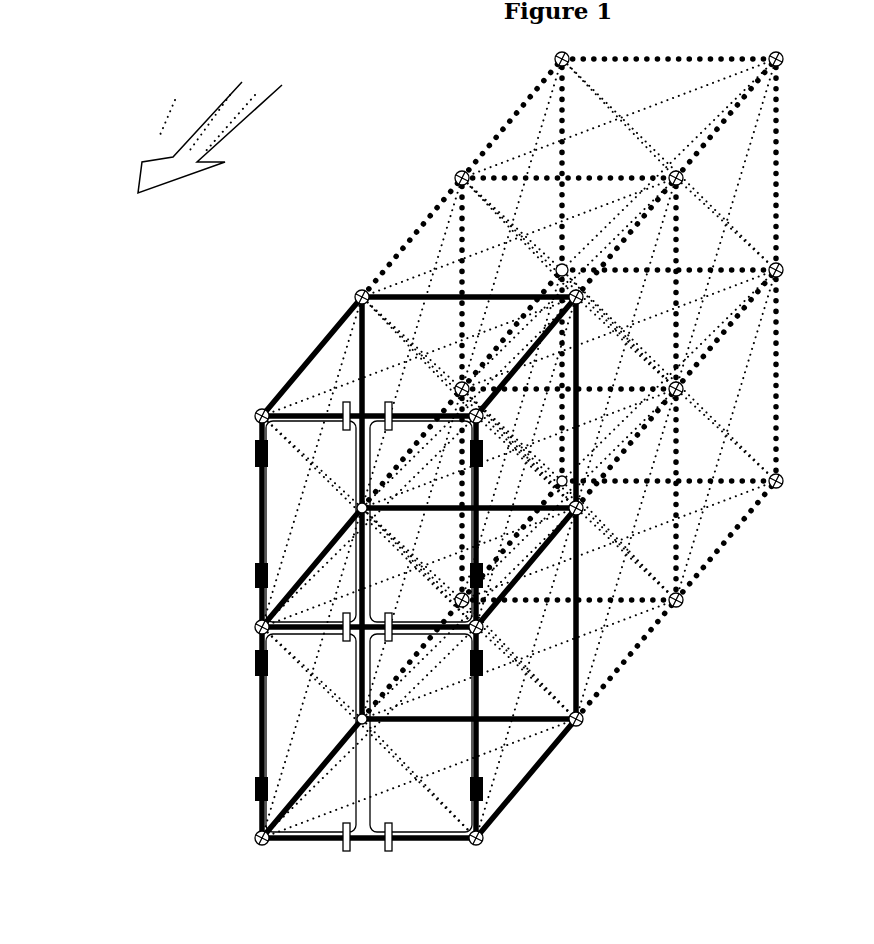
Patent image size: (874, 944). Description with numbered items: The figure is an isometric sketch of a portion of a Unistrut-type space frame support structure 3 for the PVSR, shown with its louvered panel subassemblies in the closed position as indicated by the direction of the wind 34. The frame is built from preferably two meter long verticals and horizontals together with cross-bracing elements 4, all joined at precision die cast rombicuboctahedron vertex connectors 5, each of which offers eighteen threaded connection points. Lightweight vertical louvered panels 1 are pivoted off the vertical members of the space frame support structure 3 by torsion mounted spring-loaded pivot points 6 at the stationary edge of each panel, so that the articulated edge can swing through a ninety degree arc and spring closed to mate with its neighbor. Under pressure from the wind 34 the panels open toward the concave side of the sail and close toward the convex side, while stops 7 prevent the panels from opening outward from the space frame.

The louvered panels 1 is at (313, 732).
The space frame support structure 3 is at (445, 290).
The cross-bracing elements 4 is at (383, 360).
The rombicuboctahedron vertex connectors 5 is at (258, 404).
The spring-loaded pivot points 6 is at (249, 786).
The stops 7 is at (392, 425).
The wind 34 is at (173, 158).